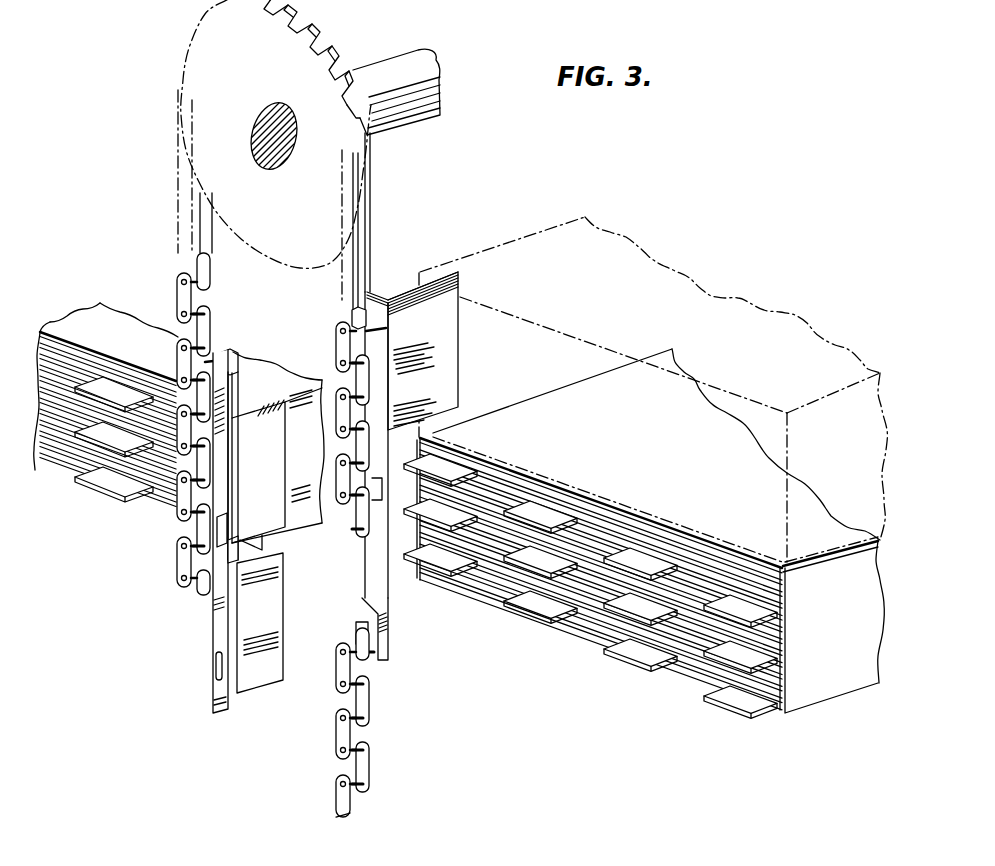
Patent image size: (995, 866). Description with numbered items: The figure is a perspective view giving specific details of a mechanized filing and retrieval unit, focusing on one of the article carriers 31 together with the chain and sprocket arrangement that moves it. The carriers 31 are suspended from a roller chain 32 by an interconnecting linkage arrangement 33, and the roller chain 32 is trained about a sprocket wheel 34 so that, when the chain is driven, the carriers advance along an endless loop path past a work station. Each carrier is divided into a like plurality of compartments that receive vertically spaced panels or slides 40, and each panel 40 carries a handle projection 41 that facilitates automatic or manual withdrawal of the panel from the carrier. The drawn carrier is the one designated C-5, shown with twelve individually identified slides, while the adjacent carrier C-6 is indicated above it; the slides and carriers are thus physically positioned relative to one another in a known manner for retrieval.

The article carrier 31 is at (857, 690).
The roller chain 32 is at (371, 740).
The interconnecting linkage arrangement 33 is at (372, 582).
The sprocket wheel 34 is at (292, 89).
The panel or slide 40 is at (66, 328).
The handle projection 41 is at (120, 486).
The carrier C-5 is at (848, 632).
The carrier C-6 is at (852, 468).